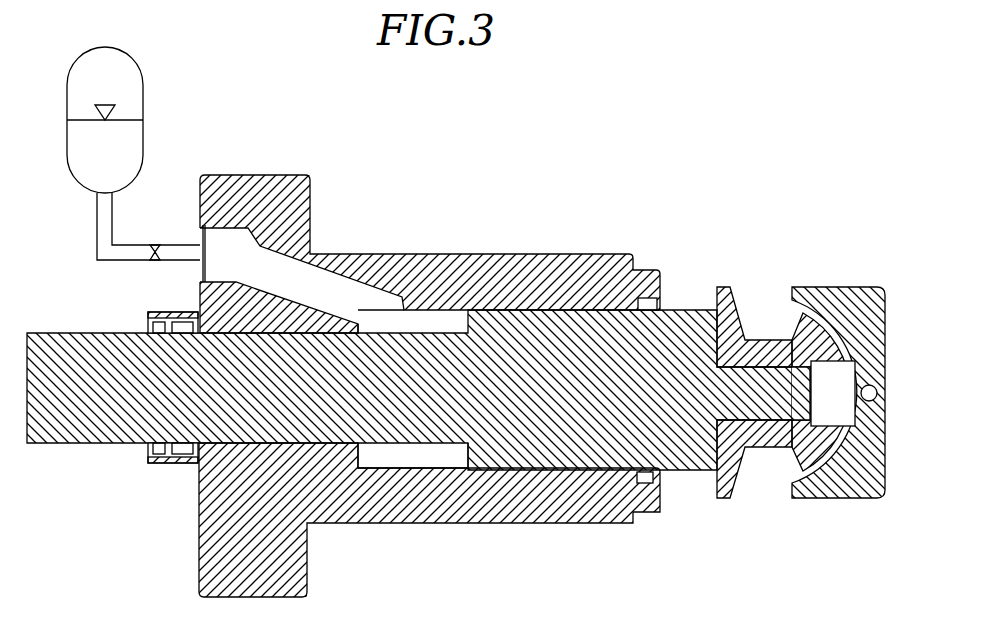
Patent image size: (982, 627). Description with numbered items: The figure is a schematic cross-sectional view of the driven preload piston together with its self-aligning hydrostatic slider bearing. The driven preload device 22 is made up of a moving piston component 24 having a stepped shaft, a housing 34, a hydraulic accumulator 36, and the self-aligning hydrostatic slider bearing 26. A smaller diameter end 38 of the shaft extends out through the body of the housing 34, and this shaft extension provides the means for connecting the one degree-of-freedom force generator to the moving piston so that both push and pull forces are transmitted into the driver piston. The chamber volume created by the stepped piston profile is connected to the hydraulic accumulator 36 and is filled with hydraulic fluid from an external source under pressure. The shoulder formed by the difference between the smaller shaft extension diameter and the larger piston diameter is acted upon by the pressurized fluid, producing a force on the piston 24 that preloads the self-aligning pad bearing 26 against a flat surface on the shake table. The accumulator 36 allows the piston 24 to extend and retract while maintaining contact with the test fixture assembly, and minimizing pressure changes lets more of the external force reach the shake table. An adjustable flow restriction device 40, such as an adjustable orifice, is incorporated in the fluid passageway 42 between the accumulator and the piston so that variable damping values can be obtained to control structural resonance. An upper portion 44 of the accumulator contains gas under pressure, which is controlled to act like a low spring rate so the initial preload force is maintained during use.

The driven preload device 22 is at (560, 226).
The moving piston component 24 is at (545, 458).
The self-aligning hydrostatic slider bearing 26 is at (839, 265).
The housing 34 is at (447, 254).
The hydraulic accumulator 36 is at (186, 173).
The smaller diameter end of the shaft 38 is at (100, 407).
The adjustable flow restriction device 40 is at (155, 245).
The fluid passageway 42 is at (188, 258).
The upper portion of the accumulator 44 is at (120, 73).